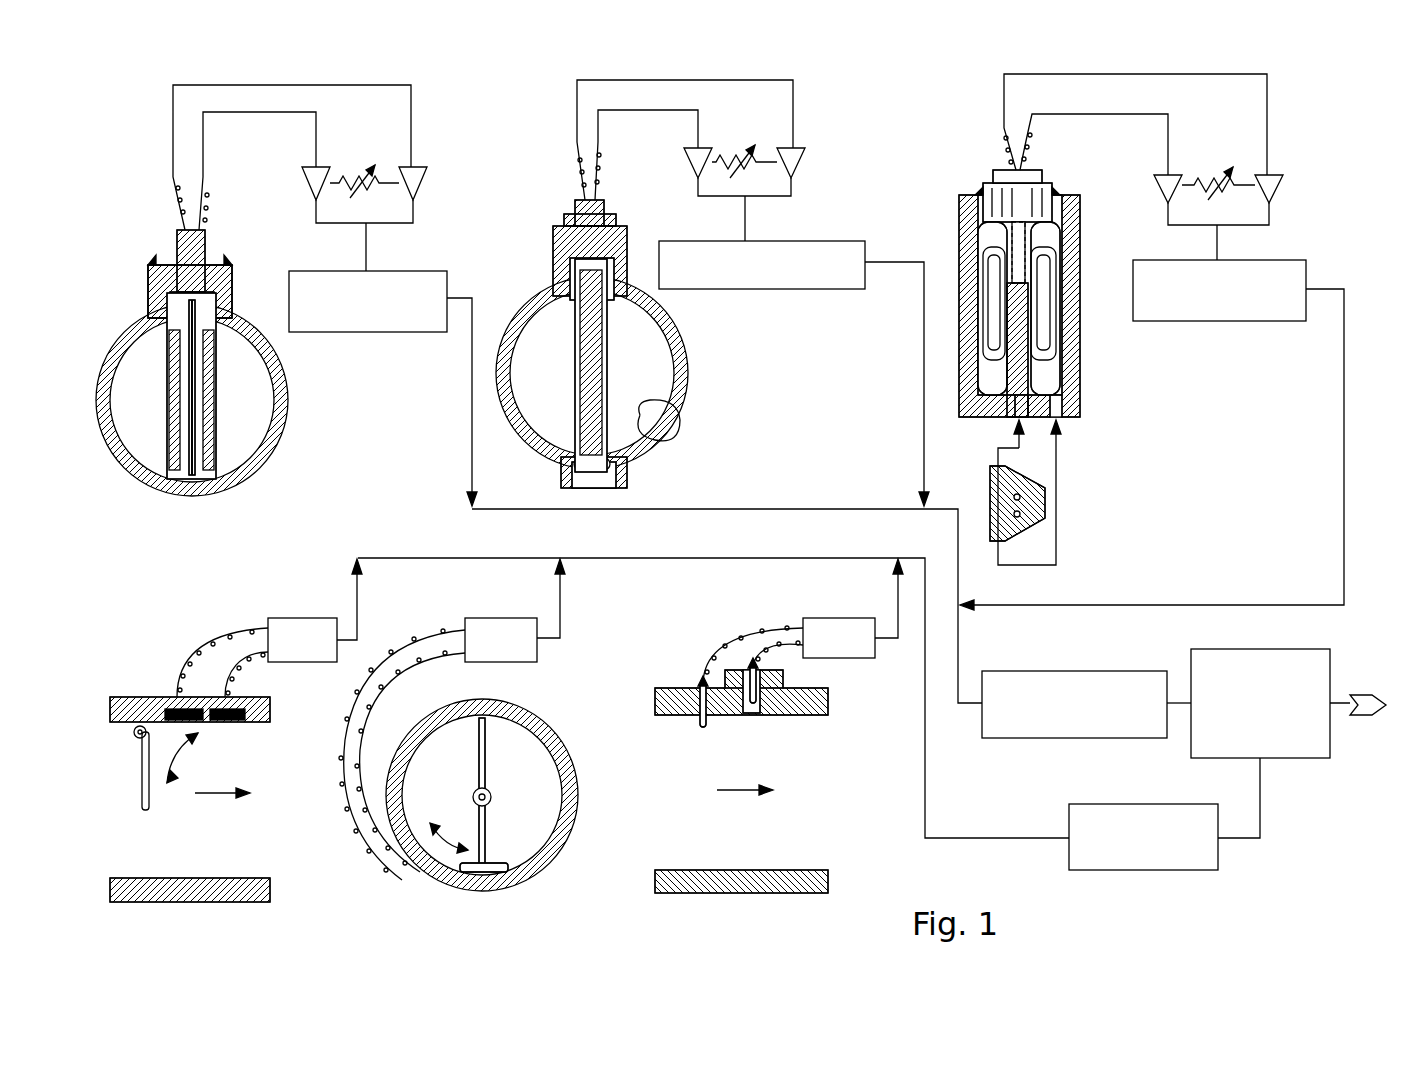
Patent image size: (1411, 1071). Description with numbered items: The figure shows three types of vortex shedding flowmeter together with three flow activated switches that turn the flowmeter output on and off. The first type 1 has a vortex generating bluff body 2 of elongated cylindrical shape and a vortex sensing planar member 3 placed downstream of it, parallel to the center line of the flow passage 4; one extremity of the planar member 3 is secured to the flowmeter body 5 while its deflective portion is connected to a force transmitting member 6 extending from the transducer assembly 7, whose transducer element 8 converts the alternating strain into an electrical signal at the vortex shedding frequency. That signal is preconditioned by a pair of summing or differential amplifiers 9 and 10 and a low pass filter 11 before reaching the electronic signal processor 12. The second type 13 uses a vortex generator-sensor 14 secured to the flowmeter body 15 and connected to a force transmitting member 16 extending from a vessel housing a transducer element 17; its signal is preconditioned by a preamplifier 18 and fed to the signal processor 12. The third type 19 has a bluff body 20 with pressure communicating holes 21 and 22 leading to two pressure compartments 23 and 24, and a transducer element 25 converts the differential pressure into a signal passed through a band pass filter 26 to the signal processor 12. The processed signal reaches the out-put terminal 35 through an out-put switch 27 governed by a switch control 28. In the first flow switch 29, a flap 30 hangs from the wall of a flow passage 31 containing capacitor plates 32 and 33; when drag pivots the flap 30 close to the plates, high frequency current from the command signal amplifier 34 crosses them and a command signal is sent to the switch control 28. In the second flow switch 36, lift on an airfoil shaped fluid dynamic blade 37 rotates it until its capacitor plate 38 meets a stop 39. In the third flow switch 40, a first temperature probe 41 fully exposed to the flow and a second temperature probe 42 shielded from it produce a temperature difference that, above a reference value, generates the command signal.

The first type of vortex flowmeter 1 is at (136, 485).
The vortex generating bluff body 2 is at (167, 410).
The vortex sensing planar member 3 is at (218, 405).
The flow passage 4 is at (234, 448).
The flowmeter body 5 is at (290, 380).
The force transmitting member 6 is at (172, 305).
The transducer assembly 7 is at (180, 262).
The transducer element 8 is at (160, 282).
The summing or differential amplifier 9 is at (300, 182).
The summing or differential amplifier 10 is at (428, 185).
The low pass or band pass filter 11 is at (380, 334).
The electronic signal processor 12 is at (1082, 742).
The second type of vortex flowmeter 13 is at (690, 366).
The vortex generator-sensor 14 is at (575, 415).
The flowmeter body 15 is at (680, 418).
The force transmitting member 16 is at (556, 272).
The transducer element 17 is at (556, 245).
The preamplifier 18 is at (780, 290).
The third type of vortex flowmeter 19 is at (1075, 424).
The vortex generating bluff body 20 is at (990, 480).
The pressure communicating hole 21 is at (1047, 470).
The pressure communicating hole 22 is at (1060, 540).
The pressure compartment 23 is at (1020, 355).
The pressure compartment 24 is at (1045, 400).
The transducer element 25 is at (1012, 236).
The band pass or low pass filter 26 is at (1235, 322).
The out-put switch 27 is at (1280, 760).
The switch control 28 is at (1170, 872).
The first embodiment of flow activated switch 29 is at (170, 685).
The flap 30 is at (140, 775).
The flow passage 31 is at (170, 842).
The capacitor plate 32 is at (160, 706).
The capacitor plate 33 is at (227, 725).
The command signal amplifier 34 is at (290, 618).
The out-put terminal 35 is at (1365, 718).
The second embodiment of flow activated switch 36 is at (575, 740).
The fluid dynamic blade 37 is at (490, 845).
The capacitor plate 38 is at (500, 870).
The stop 39 is at (432, 825).
The third embodiment of flow activated switch 40 is at (790, 680).
The first temperature probe 41 is at (700, 722).
The second temperature probe 42 is at (753, 710).